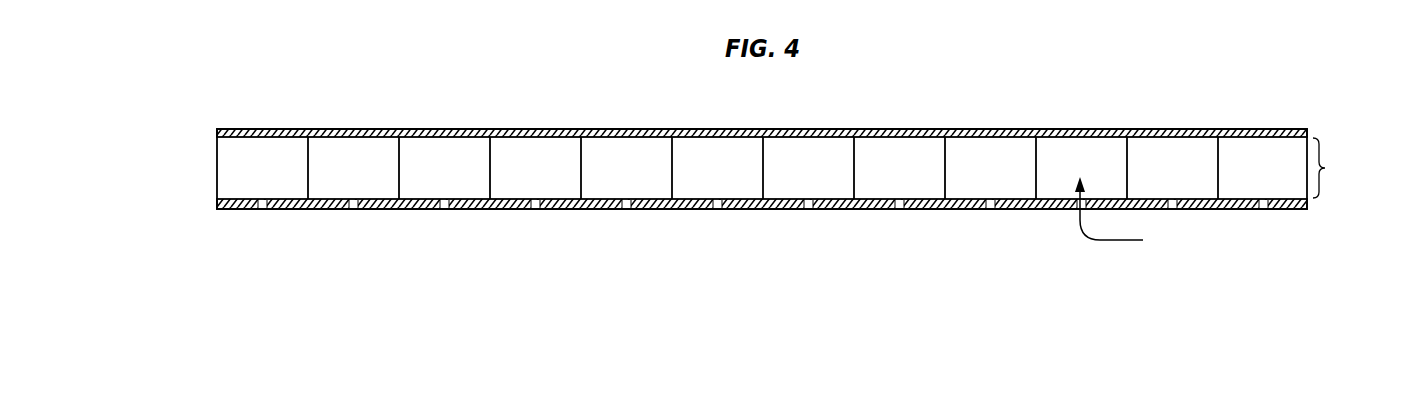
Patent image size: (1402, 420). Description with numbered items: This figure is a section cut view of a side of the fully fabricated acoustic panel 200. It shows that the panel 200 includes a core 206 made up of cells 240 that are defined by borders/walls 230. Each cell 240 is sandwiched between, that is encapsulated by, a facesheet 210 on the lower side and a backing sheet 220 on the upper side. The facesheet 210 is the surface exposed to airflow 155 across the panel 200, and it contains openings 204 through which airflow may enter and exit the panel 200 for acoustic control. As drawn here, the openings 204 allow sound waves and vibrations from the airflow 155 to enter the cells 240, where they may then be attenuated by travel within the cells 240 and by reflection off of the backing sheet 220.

The acoustic panel 200 is at (1141, 107).
The backing sheet 220 is at (525, 128).
The facesheet 210 is at (486, 210).
The openings 204 is at (1076, 216).
The borders/walls 230 is at (855, 158).
The cells 240 is at (810, 150).
The airflow 155 is at (1127, 241).
The core 206 is at (1336, 168).